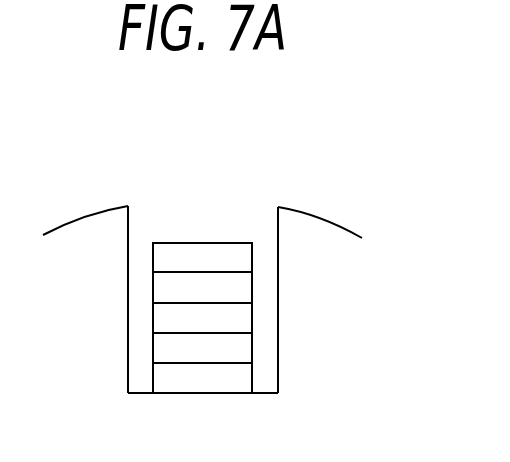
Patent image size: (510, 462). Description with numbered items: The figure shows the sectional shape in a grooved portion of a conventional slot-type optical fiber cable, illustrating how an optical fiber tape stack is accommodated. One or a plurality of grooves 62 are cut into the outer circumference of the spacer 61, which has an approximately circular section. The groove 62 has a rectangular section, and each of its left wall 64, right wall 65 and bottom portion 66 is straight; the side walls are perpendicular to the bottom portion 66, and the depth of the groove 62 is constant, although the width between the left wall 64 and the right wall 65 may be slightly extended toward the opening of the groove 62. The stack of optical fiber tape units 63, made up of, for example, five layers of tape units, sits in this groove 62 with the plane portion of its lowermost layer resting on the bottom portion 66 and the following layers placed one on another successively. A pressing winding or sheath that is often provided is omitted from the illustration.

The spacer 61 is at (102, 222).
The groove 62 is at (155, 220).
The stack of a plurality of optical fiber units 63 is at (218, 242).
The left wall 64 is at (130, 323).
The right wall 65 is at (278, 325).
The bottom portion 66 is at (158, 393).